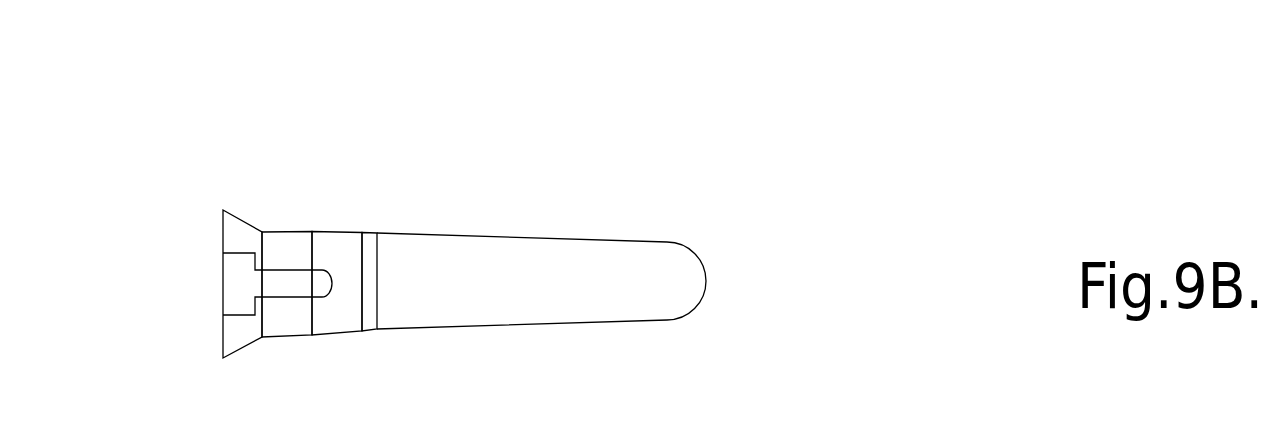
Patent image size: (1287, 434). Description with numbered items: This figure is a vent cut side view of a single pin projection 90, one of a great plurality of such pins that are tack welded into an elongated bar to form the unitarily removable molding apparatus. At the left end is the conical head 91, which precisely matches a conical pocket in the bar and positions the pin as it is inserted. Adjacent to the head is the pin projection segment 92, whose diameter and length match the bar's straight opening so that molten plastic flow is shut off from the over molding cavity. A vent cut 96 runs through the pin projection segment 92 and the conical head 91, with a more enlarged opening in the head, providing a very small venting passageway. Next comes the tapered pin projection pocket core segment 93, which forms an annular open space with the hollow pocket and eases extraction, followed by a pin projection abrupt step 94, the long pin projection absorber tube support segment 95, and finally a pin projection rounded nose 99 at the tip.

The pin projection 90 is at (645, 215).
The conical head 91 is at (238, 217).
The pin projection segment 92 is at (283, 232).
The pin projection pocket core segment 93 is at (345, 230).
The pin projection abrupt step 94 is at (378, 233).
The pin projection absorber tube support segment 95 is at (507, 238).
The vent cut 96 is at (240, 302).
The rounded end 99 is at (693, 250).